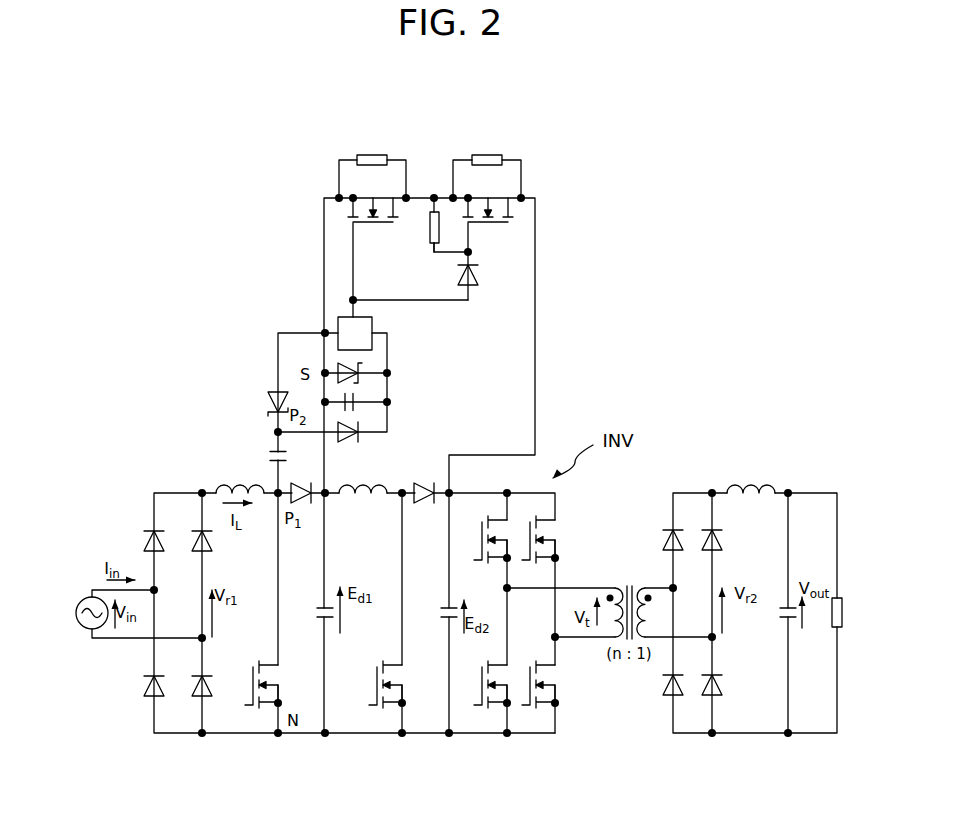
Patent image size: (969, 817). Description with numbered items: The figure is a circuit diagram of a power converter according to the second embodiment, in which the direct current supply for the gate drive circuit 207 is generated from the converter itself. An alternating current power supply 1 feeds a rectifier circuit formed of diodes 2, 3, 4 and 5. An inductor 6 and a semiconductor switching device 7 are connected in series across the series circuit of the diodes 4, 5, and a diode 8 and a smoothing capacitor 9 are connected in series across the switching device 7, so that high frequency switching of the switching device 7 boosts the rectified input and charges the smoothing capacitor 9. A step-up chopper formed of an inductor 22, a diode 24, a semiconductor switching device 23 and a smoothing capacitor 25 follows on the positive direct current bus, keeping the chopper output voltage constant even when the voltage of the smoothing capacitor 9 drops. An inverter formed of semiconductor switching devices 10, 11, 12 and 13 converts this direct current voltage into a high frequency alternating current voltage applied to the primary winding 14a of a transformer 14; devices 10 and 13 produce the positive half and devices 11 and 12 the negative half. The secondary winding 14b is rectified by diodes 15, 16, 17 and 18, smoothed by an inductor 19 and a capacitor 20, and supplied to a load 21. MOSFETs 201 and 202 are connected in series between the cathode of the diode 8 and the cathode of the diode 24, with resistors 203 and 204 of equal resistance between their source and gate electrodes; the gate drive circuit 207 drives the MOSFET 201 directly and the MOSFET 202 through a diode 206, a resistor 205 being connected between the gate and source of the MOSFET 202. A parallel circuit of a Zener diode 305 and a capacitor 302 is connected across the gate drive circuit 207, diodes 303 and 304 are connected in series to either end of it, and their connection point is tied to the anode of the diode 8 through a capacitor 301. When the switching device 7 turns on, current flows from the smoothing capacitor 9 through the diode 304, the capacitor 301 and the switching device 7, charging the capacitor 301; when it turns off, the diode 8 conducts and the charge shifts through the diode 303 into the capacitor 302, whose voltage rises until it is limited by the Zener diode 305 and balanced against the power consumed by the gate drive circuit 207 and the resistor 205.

The alternating current power supply 1 is at (85, 598).
The diode 2 is at (148, 525).
The diode 3 is at (150, 674).
The diode 4 is at (197, 525).
The diode 5 is at (197, 672).
The inductor 6 is at (233, 484).
The semiconductor switching device 7 is at (262, 655).
The diode 8 is at (302, 487).
The smoothing capacitor 9 is at (316, 606).
The semiconductor switching device 10 is at (497, 514).
The semiconductor switching device 11 is at (476, 684).
The semiconductor switching device 12 is at (547, 516).
The semiconductor switching device 13 is at (547, 664).
The transformer 14 is at (620, 580).
The primary winding 14a is at (613, 587).
The secondary winding 14b is at (642, 587).
The diode 15 is at (666, 522).
The diode 16 is at (663, 686).
The diode 17 is at (708, 522).
The diode 18 is at (722, 688).
The inductor 19 is at (748, 479).
The capacitor 20 is at (780, 598).
The load 21 is at (842, 617).
The inductor 22 is at (367, 487).
The semiconductor switching device 23 is at (372, 682).
The diode 24 is at (423, 486).
The smoothing capacitor 25 is at (445, 604).
The MOSFET 201 is at (342, 222).
The MOSFET 202 is at (518, 222).
The resistor 203 is at (368, 157).
The resistor 204 is at (483, 157).
The resistor 205 is at (430, 232).
The diode 206 is at (478, 270).
The gate drive circuit 207 is at (372, 324).
The capacitor 301 is at (268, 447).
The capacitor 302 is at (370, 393).
The diode 303 is at (370, 423).
The diode 304 is at (270, 389).
The Zener diode 305 is at (372, 366).